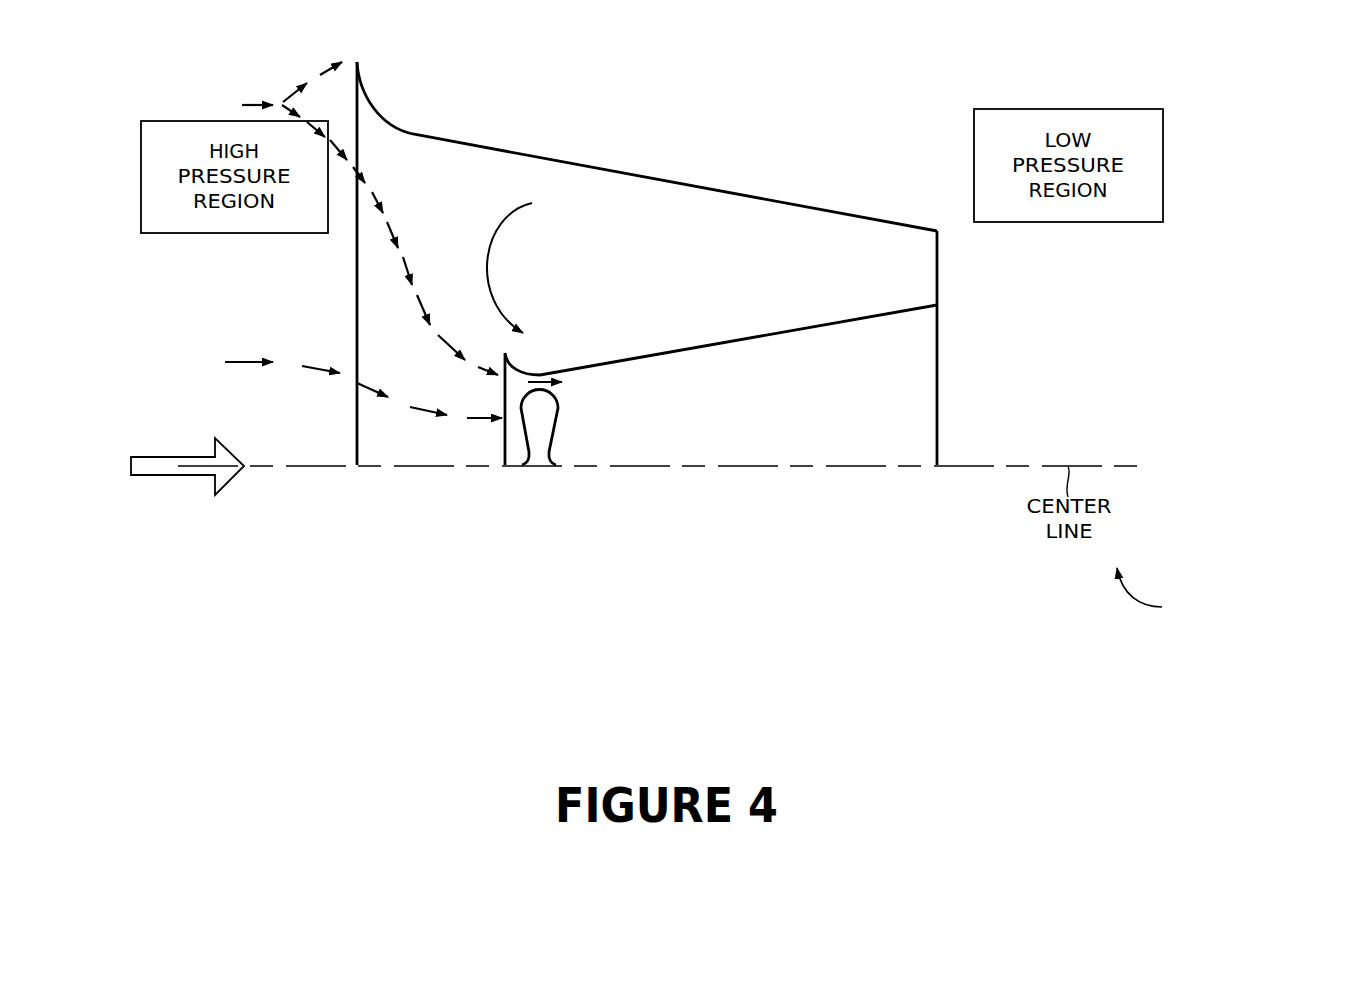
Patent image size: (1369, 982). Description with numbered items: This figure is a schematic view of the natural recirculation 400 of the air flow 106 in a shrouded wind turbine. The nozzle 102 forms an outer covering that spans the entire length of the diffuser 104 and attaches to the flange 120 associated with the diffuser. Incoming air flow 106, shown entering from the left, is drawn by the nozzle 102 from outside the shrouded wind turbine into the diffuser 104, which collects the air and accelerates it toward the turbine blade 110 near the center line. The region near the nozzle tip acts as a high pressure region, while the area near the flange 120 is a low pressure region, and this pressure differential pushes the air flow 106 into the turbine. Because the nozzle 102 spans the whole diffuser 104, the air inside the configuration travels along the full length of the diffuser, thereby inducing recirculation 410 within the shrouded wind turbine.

The nozzle 102 is at (640, 110).
The diffuser 104 is at (768, 336).
The air flow 106 is at (178, 455).
The turbine blade 110 is at (540, 457).
The flange 120 is at (1003, 267).
The natural recirculation 400 is at (1213, 605).
The induced recirculation 410 is at (490, 248).